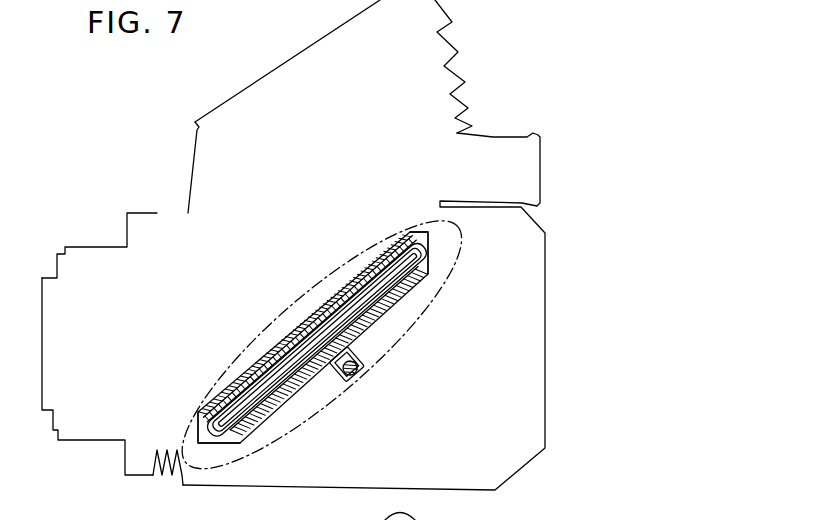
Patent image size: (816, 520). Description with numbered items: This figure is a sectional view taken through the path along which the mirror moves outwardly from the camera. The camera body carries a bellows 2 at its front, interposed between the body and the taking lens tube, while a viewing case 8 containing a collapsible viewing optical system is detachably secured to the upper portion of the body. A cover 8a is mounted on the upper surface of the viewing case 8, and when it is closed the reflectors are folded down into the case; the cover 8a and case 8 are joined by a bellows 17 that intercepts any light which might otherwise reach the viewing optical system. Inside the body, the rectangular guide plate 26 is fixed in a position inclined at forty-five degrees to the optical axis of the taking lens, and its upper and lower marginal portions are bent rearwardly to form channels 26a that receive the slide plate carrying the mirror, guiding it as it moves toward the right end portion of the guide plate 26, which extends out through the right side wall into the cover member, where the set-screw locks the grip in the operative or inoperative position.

The bellows 2 is at (163, 478).
The viewing case 8 is at (191, 163).
The cover 8a is at (318, 32).
The bellows 17 is at (459, 70).
The guide plate 26 is at (203, 421).
The channels 26a is at (229, 440).